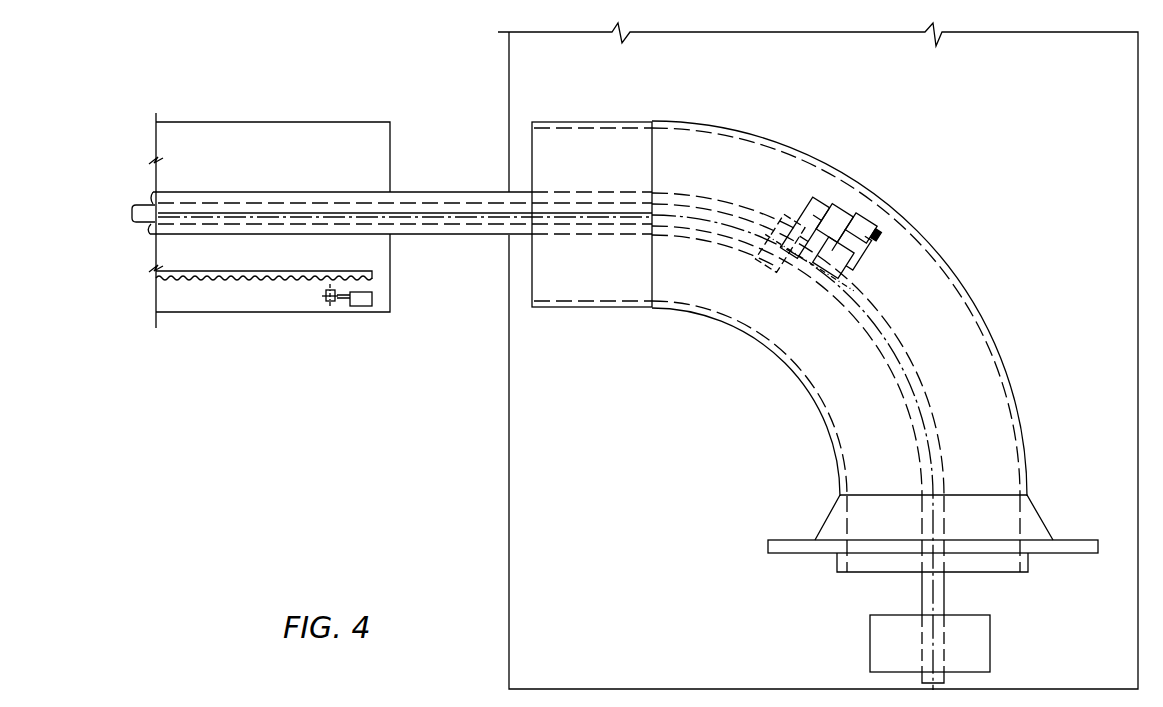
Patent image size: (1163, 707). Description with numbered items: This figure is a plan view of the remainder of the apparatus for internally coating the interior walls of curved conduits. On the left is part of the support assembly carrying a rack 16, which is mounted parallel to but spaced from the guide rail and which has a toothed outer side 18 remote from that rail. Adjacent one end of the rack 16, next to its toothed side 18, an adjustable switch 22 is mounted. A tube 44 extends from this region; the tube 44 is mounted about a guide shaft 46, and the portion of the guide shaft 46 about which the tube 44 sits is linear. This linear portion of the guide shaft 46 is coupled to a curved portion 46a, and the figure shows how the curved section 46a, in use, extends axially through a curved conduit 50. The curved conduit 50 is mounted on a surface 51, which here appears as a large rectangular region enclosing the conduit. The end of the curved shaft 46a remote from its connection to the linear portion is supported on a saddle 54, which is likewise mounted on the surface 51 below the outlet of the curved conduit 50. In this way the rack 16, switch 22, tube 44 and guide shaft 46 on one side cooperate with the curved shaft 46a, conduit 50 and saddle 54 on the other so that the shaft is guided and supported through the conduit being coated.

The rack 16 is at (262, 272).
The toothed outer side 18 is at (213, 278).
The adjustable switch 22 is at (356, 306).
The tube 44 is at (213, 191).
The guide shaft 46 is at (143, 213).
The curved portion of guide shaft 46a is at (902, 385).
The curved conduit 50 is at (580, 122).
The surface 51 is at (515, 483).
The saddle 54 is at (875, 641).